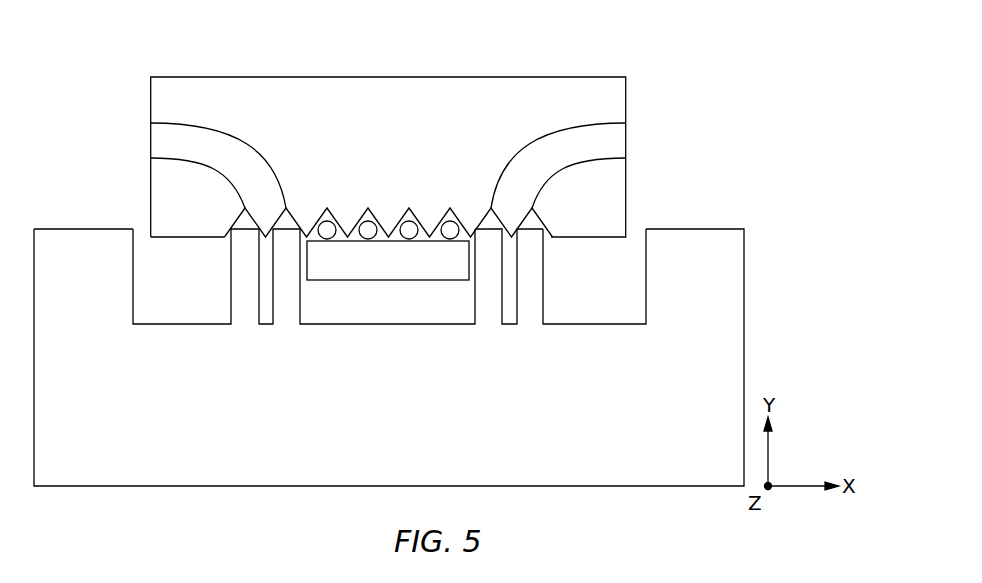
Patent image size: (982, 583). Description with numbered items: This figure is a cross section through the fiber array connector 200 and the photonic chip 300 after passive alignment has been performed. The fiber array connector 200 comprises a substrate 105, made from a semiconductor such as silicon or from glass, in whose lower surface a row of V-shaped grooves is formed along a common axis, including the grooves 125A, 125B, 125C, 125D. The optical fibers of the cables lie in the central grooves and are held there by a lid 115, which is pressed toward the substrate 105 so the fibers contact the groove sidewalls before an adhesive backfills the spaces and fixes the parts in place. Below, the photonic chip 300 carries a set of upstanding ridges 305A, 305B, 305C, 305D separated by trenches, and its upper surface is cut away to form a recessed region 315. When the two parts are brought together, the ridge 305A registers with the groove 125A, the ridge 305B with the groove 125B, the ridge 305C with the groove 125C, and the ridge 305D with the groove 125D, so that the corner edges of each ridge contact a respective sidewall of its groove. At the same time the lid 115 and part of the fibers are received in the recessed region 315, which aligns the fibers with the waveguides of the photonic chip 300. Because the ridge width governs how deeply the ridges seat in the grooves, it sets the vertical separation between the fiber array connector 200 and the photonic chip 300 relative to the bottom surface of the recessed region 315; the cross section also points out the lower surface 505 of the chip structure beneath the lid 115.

The fiber array connector 200 is at (390, 119).
The substrate 105 is at (396, 77).
The groove 125A is at (151, 158).
The groove 125B is at (151, 123).
The groove 125C is at (626, 123).
The groove 125D is at (626, 158).
The lid 115 is at (406, 270).
The photonic chip 300 is at (408, 462).
The ridge 305A is at (231, 287).
The ridge 305B is at (301, 287).
The ridge 305C is at (474, 287).
The ridge 305D is at (541, 287).
The recessed region 315 is at (617, 268).
The cavity bottom surface 505 is at (387, 340).